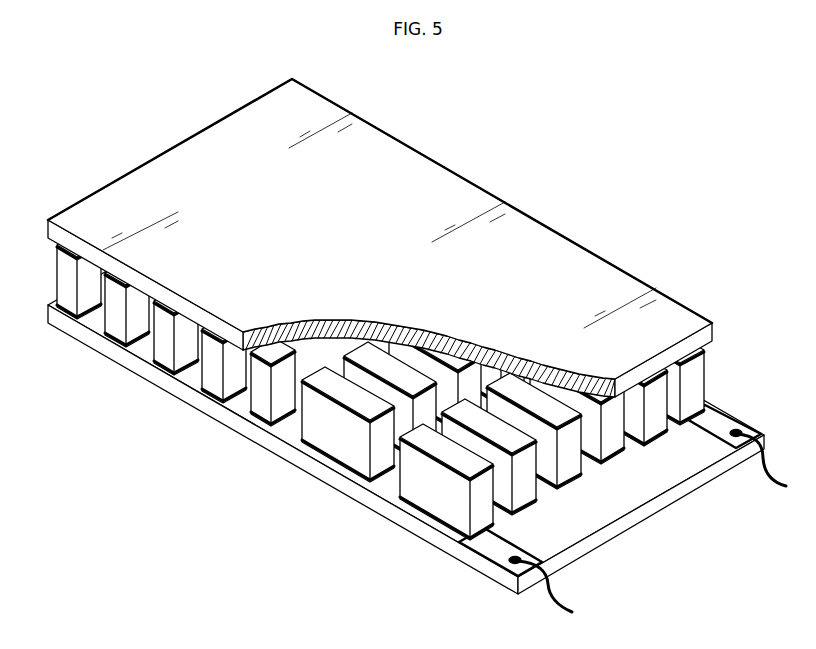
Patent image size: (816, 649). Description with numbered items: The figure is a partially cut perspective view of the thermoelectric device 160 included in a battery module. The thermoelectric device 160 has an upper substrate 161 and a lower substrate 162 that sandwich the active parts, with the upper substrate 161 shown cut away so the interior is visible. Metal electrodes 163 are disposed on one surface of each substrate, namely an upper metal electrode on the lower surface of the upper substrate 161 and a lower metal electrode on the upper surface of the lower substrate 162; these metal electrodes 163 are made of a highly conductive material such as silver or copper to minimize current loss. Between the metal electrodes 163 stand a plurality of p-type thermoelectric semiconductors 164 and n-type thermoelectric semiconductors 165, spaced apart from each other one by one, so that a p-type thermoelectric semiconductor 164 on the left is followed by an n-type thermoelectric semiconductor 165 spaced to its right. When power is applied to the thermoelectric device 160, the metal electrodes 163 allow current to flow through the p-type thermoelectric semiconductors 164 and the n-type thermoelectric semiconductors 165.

The thermoelectric device 160 is at (657, 226).
The upper substrate 161 is at (556, 244).
The lower substrate 162 is at (253, 431).
The metal electrode 163 is at (248, 355).
The p-type thermoelectric semiconductor 164 is at (360, 458).
The n-type thermoelectric semiconductor 165 is at (414, 490).